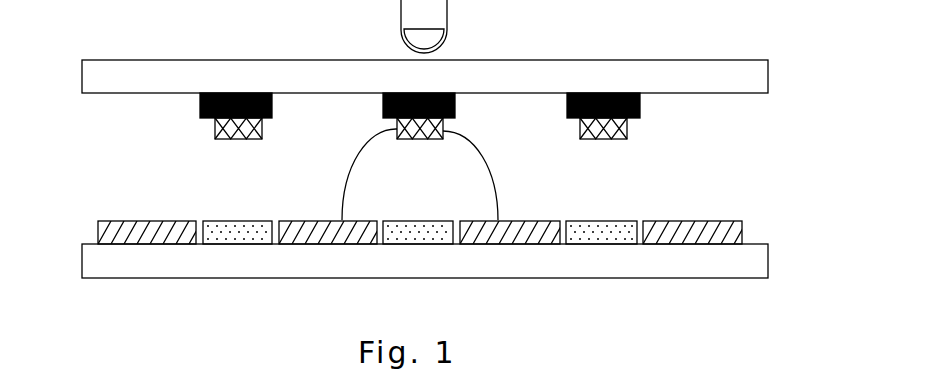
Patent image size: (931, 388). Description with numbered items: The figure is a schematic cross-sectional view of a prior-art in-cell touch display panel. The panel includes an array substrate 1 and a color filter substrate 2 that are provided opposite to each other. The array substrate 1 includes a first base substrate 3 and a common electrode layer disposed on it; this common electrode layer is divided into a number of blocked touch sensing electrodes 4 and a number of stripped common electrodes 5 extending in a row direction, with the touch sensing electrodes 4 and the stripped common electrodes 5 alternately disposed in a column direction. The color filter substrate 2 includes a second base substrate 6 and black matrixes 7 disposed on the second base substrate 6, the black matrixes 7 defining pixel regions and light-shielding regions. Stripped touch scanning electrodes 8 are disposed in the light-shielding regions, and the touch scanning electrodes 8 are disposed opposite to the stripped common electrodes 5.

The array substrate 1 is at (420, 219).
The color filter substrate 2 is at (420, 122).
The first base substrate 3 is at (756, 264).
The touch sensing electrode 4 is at (150, 228).
The stripped common electrode 5 is at (237, 232).
The second base substrate 6 is at (756, 81).
The black matrix 7 is at (640, 113).
The touch scanning electrode 8 is at (597, 128).